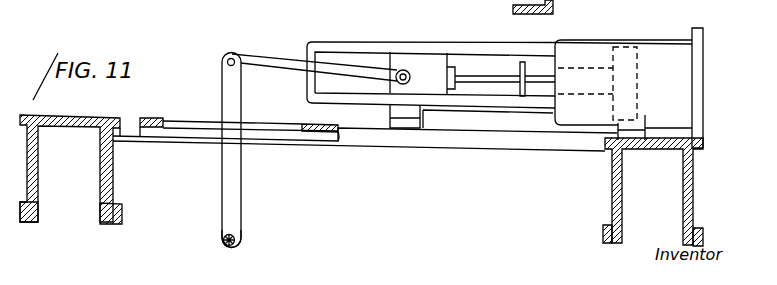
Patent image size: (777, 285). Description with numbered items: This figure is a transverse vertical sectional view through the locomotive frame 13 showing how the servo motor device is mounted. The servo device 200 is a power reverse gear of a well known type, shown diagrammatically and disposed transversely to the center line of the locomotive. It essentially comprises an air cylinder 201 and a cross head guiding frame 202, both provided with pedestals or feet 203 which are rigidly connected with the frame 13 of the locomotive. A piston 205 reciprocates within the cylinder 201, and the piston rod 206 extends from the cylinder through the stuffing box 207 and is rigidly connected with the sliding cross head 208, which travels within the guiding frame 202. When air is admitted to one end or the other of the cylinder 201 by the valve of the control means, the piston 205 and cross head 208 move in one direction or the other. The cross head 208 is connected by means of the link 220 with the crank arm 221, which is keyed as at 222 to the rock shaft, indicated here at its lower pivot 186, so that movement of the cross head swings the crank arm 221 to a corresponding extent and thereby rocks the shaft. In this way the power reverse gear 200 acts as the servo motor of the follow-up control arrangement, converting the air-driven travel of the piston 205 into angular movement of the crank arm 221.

The frame 13 is at (557, 150).
The pivot shaft 186 is at (232, 247).
The servo device 200 is at (628, 35).
The air cylinder 201 is at (667, 47).
The cross head guiding frame 202 is at (370, 40).
The pedestals or feet 203 is at (407, 120).
The piston 205 is at (612, 96).
The piston rod 206 is at (472, 75).
The stuffing box 207 is at (552, 43).
The sliding cross head 208 is at (410, 62).
The link 220 is at (265, 65).
The crank arm 221 is at (248, 163).
The key 222 is at (236, 234).